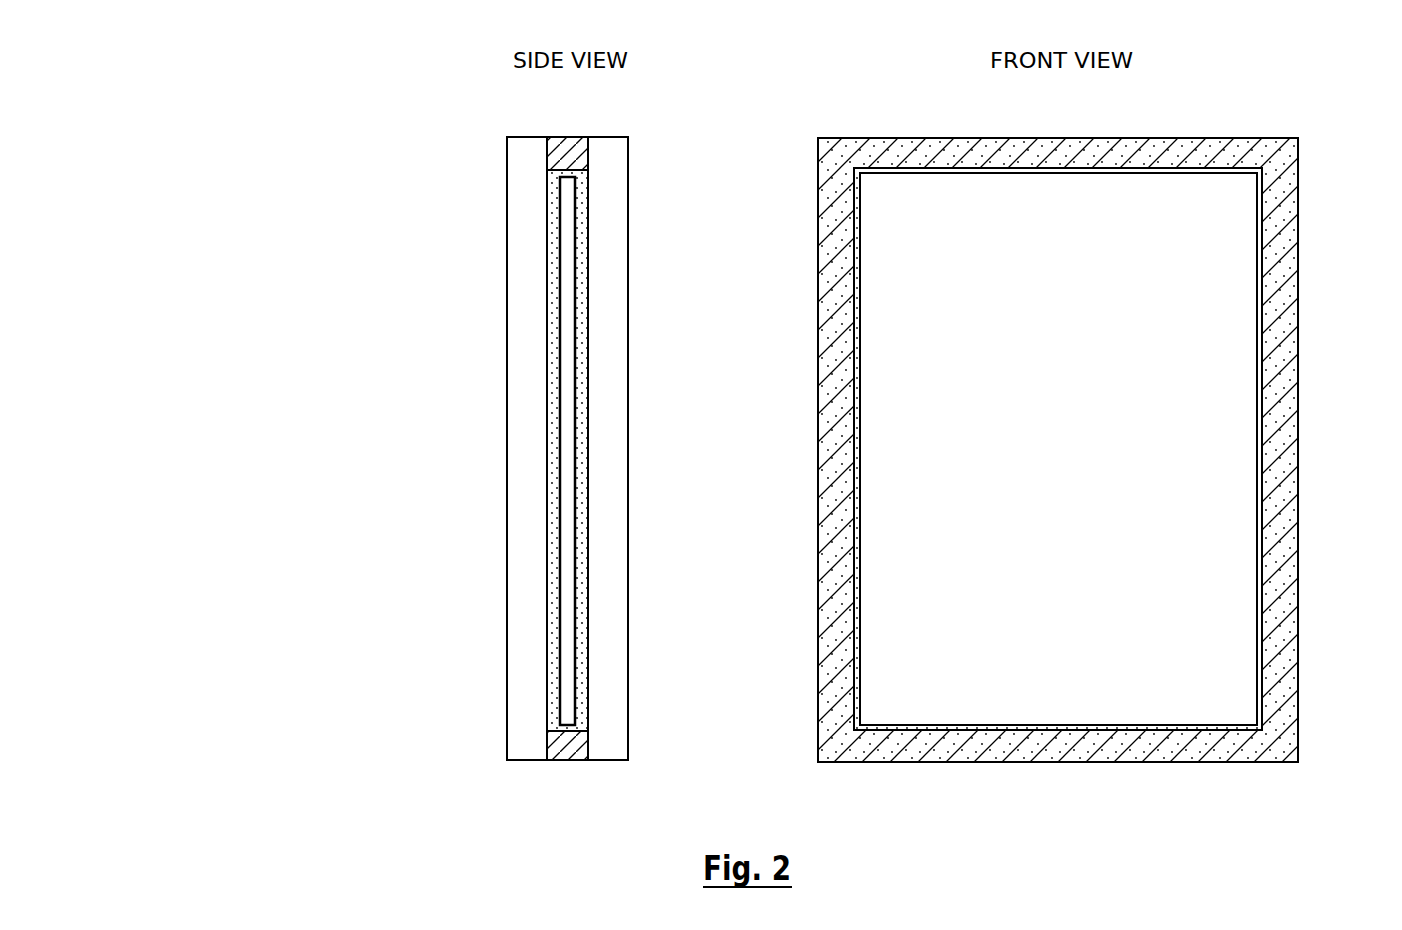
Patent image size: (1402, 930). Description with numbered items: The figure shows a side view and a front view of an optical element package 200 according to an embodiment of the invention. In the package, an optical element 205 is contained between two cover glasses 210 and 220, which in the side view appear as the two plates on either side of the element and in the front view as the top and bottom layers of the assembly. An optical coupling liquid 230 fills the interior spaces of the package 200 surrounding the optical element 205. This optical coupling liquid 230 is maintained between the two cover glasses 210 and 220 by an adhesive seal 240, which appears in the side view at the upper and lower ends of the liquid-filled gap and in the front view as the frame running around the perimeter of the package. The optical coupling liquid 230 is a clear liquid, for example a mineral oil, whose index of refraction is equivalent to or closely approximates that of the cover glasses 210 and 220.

The optical element package 200 is at (485, 298).
The optical element 205 is at (561, 455).
The cover glass 210 is at (506, 186).
The cover glass 220 is at (630, 276).
The optical coupling liquid 230 is at (1325, 397).
The adhesive seal 240 is at (546, 747).